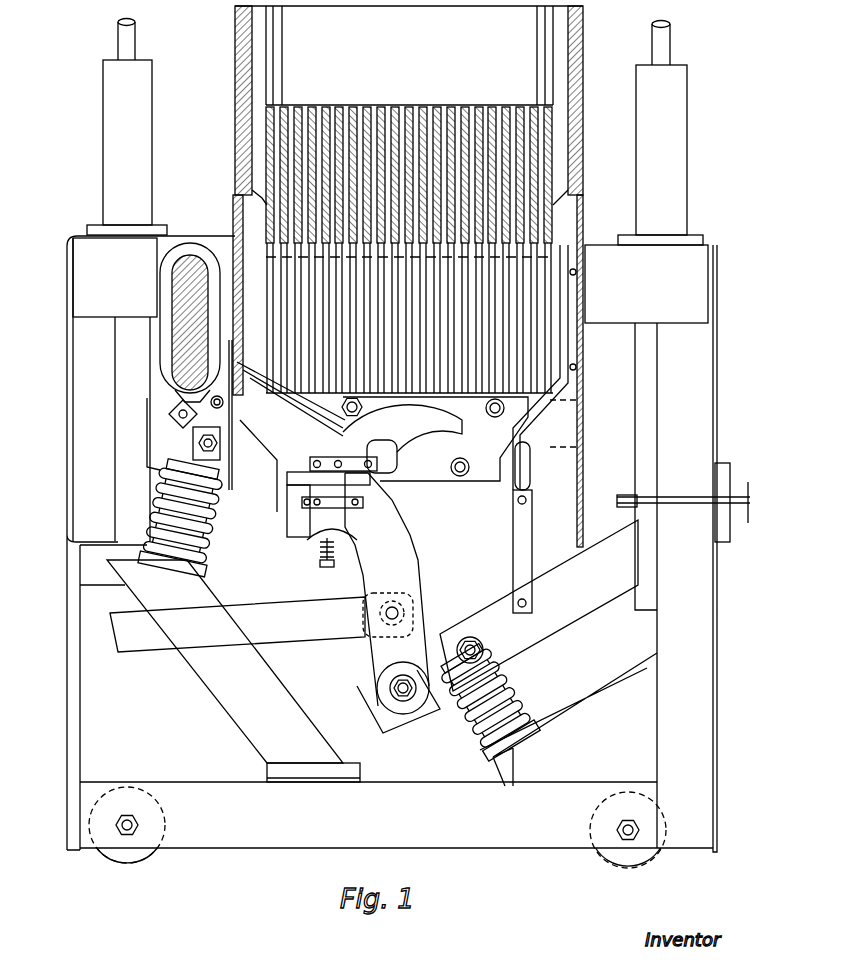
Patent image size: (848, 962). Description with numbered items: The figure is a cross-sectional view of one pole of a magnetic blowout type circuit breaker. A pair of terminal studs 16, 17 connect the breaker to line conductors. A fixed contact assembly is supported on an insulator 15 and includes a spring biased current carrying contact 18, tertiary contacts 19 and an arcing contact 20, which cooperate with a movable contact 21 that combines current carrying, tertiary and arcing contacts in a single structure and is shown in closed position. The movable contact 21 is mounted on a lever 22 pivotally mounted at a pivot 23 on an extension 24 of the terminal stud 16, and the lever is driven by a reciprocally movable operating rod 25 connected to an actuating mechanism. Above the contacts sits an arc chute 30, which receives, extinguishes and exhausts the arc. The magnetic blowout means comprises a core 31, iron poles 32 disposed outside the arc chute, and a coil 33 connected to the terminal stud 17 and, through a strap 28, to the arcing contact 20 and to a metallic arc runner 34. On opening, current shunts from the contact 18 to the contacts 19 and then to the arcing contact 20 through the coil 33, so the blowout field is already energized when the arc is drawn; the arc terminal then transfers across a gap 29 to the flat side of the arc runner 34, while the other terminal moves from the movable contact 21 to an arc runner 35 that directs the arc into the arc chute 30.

The insulator 15 is at (208, 528).
The terminal stud 16 is at (667, 47).
The terminal stud 17 is at (122, 45).
The current carrying contact 18 is at (347, 537).
The tertiary contacts 19 is at (378, 500).
The arcing contact 20 is at (395, 460).
The movable contact 21 is at (456, 428).
The lever 22 is at (418, 565).
The pivot 23 is at (407, 694).
The extension 24 is at (555, 624).
The operating rod 25 is at (302, 632).
The strap 28 is at (273, 413).
The gap 29 is at (435, 439).
The arc chute 30 is at (428, 64).
The core 31 is at (182, 265).
The poles 32 is at (212, 244).
The coil 33 is at (166, 298).
The arc runner 34 is at (236, 255).
The arc runner 35 is at (578, 245).